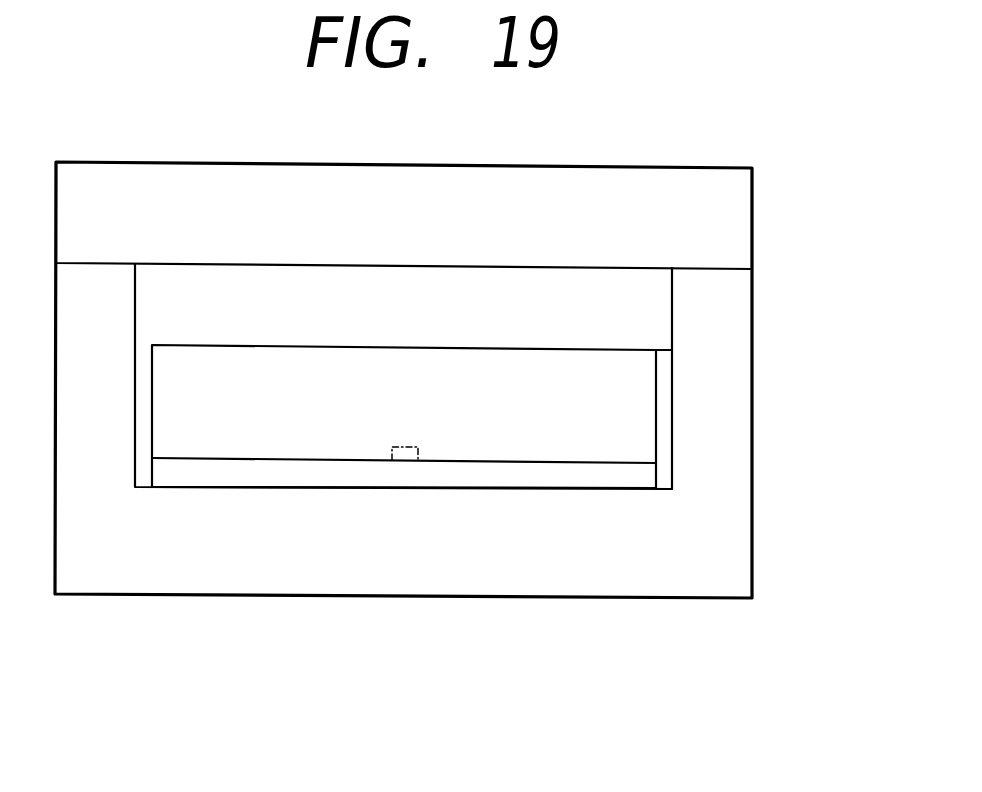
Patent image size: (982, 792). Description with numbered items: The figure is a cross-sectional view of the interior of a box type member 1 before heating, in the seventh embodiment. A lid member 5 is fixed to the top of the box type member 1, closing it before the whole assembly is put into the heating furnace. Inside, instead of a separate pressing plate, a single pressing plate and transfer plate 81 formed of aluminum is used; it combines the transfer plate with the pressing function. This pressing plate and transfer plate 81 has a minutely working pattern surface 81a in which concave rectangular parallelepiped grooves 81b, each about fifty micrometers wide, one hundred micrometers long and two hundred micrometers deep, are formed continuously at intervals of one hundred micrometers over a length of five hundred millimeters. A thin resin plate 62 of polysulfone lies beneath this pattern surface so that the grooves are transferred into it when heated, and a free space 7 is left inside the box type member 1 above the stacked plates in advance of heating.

The box type member 1 is at (720, 570).
The lid member 5 is at (732, 207).
The free space 7 is at (650, 299).
The resin plate 62 is at (593, 482).
The pressing plate and transfer plate 81 is at (635, 373).
The minutely working pattern surface 81a is at (618, 465).
The concave rectangular parallelepiped grooves 81b is at (402, 460).